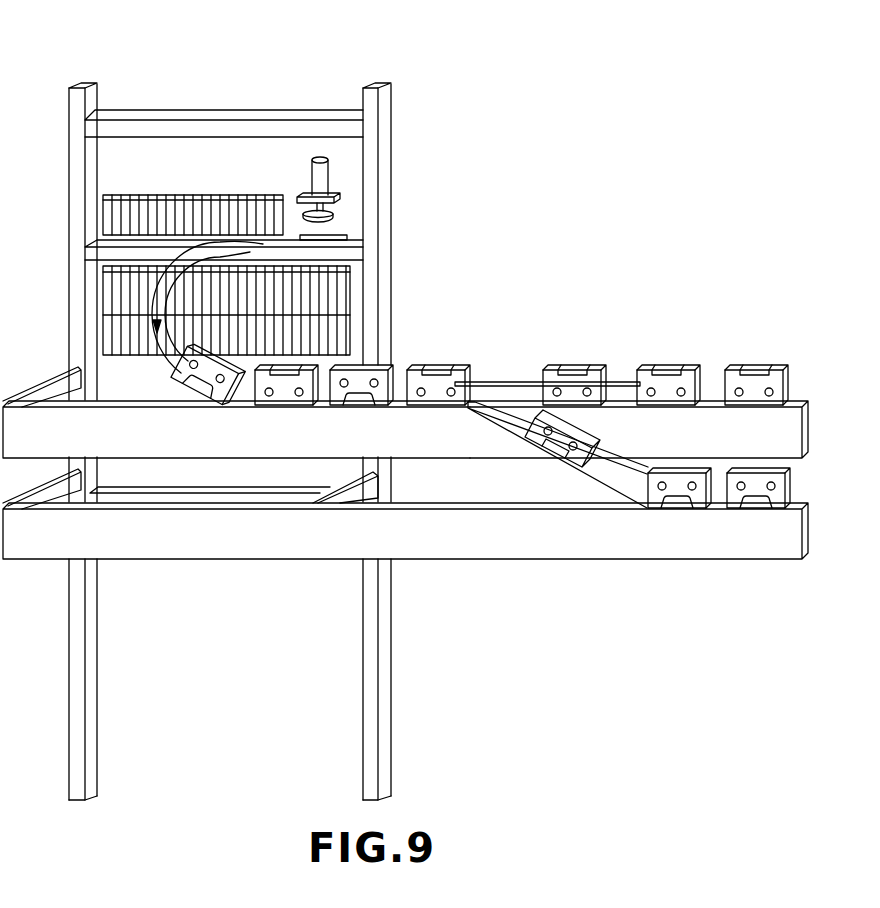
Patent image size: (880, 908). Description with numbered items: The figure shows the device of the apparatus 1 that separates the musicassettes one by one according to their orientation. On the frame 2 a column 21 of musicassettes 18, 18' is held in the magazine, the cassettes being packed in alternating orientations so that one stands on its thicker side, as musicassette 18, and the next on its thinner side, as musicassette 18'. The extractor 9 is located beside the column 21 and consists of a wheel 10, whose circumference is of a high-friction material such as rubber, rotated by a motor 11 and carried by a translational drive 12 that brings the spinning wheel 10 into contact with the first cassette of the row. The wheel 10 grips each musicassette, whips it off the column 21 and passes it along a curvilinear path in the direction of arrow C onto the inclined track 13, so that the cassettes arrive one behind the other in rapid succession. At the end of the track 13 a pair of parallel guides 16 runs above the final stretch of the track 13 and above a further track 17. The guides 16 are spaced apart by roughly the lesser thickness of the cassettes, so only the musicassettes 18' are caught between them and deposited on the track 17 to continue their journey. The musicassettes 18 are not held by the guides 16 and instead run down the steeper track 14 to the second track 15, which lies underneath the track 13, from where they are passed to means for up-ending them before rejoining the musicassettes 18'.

The apparatus 1 is at (303, 647).
The frame 2 is at (74, 192).
The extractor 9 is at (293, 187).
The wheel 10 is at (333, 216).
The motor 11 is at (327, 170).
The translational drive 12 is at (340, 197).
The inclined track 13 is at (23, 440).
The track 14 is at (430, 493).
The second track 15 is at (503, 556).
The guides 16 is at (490, 380).
The track 17 is at (787, 438).
The musicassette 18 is at (480, 354).
The musicassette 18' is at (517, 302).
The column 21 is at (137, 193).